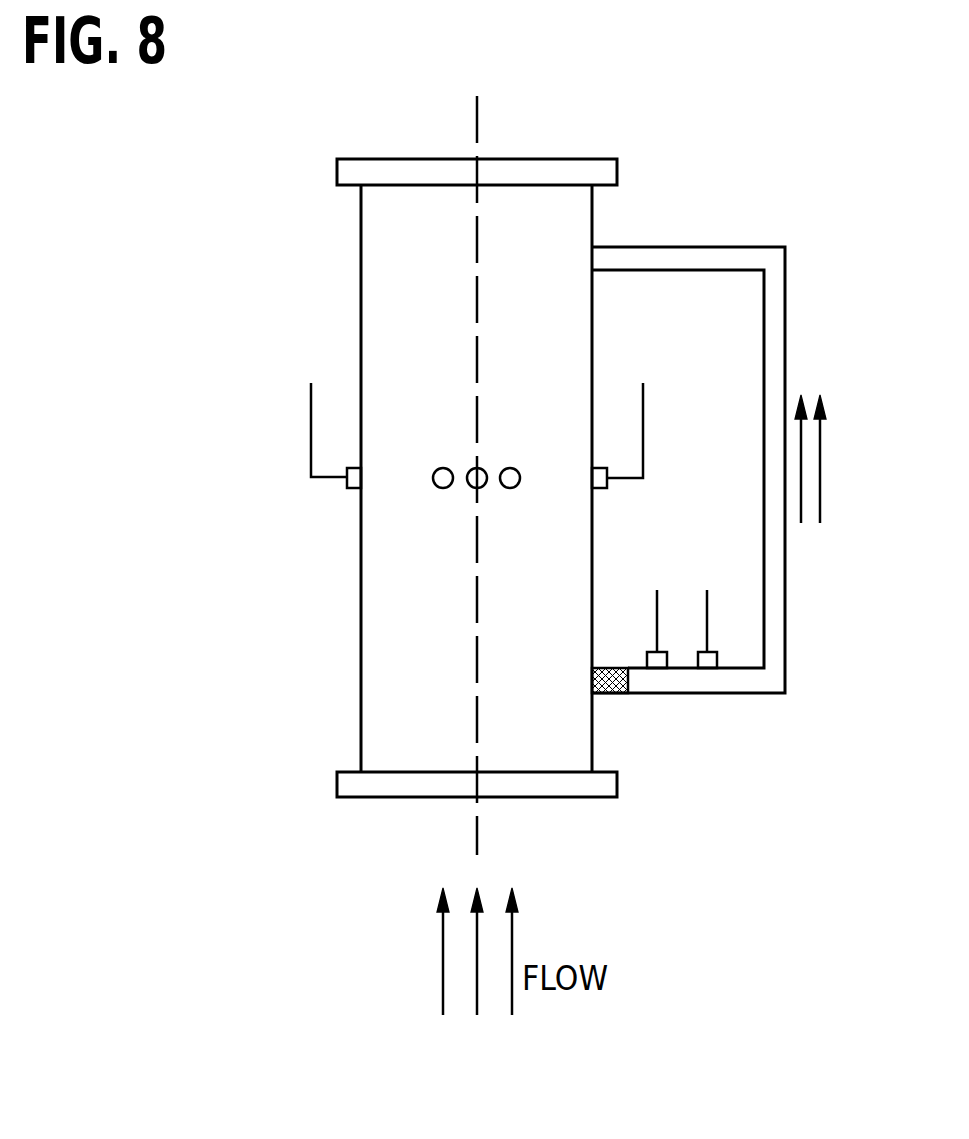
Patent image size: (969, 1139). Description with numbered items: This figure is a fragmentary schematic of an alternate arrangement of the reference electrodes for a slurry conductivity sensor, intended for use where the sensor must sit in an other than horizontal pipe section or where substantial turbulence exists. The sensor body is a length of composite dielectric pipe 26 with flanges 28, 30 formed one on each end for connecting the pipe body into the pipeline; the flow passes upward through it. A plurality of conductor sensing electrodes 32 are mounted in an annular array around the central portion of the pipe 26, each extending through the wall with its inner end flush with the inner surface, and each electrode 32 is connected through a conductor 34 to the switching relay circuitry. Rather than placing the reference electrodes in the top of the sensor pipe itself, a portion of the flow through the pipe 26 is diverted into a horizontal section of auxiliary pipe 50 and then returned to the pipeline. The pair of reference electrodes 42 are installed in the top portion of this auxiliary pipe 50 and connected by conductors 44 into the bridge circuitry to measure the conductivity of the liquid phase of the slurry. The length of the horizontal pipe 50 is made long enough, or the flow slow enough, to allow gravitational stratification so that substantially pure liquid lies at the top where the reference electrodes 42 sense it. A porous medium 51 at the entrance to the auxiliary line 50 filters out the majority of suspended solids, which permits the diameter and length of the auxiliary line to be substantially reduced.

The pipe 26 is at (403, 247).
The flange 28 is at (375, 780).
The flange 30 is at (571, 168).
The conductor sensing electrode 32 is at (595, 485).
The conductor 34 is at (308, 453).
The reference electrode 42 is at (663, 670).
The conductor 44 is at (657, 617).
The auxiliary pipe 50 is at (685, 253).
The porous medium 51 is at (620, 690).